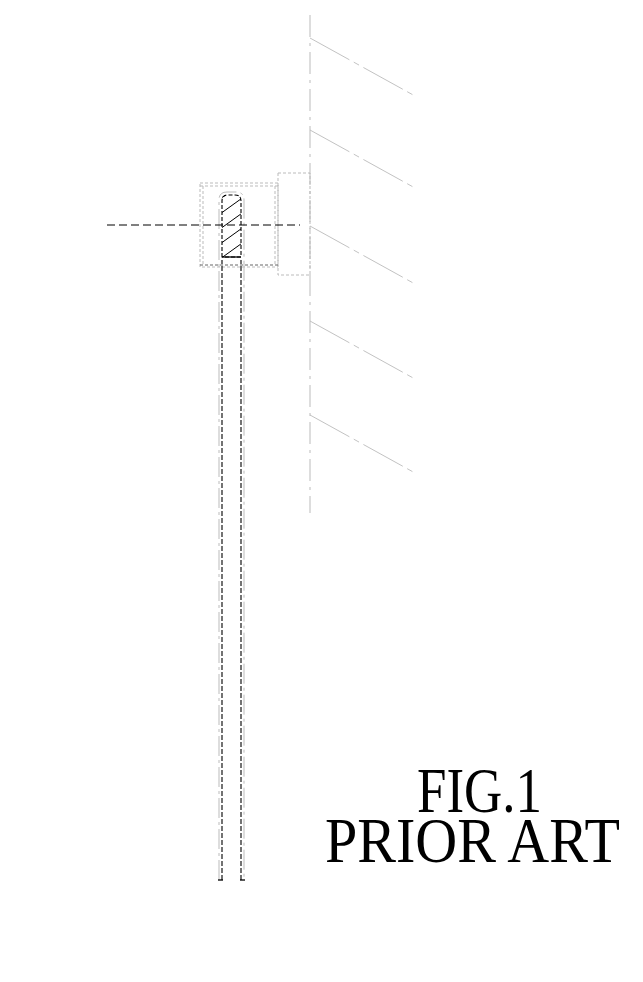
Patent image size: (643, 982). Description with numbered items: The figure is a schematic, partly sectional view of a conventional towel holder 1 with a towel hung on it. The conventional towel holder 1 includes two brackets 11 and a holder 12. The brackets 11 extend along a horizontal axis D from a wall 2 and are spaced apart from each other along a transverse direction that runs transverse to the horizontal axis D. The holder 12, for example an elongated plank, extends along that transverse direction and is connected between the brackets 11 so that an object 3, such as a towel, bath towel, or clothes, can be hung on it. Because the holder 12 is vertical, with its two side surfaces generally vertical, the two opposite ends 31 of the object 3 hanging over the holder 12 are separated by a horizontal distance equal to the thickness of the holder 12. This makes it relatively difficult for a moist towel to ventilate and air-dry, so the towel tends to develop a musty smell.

The conventional towel holder 1 is at (188, 196).
The brackets 11 is at (210, 185).
The holder 12 is at (229, 193).
The wall 2 is at (302, 100).
The object 3 is at (203, 376).
The opposite ends 31 is at (220, 540).
The horizontal axis D is at (191, 222).